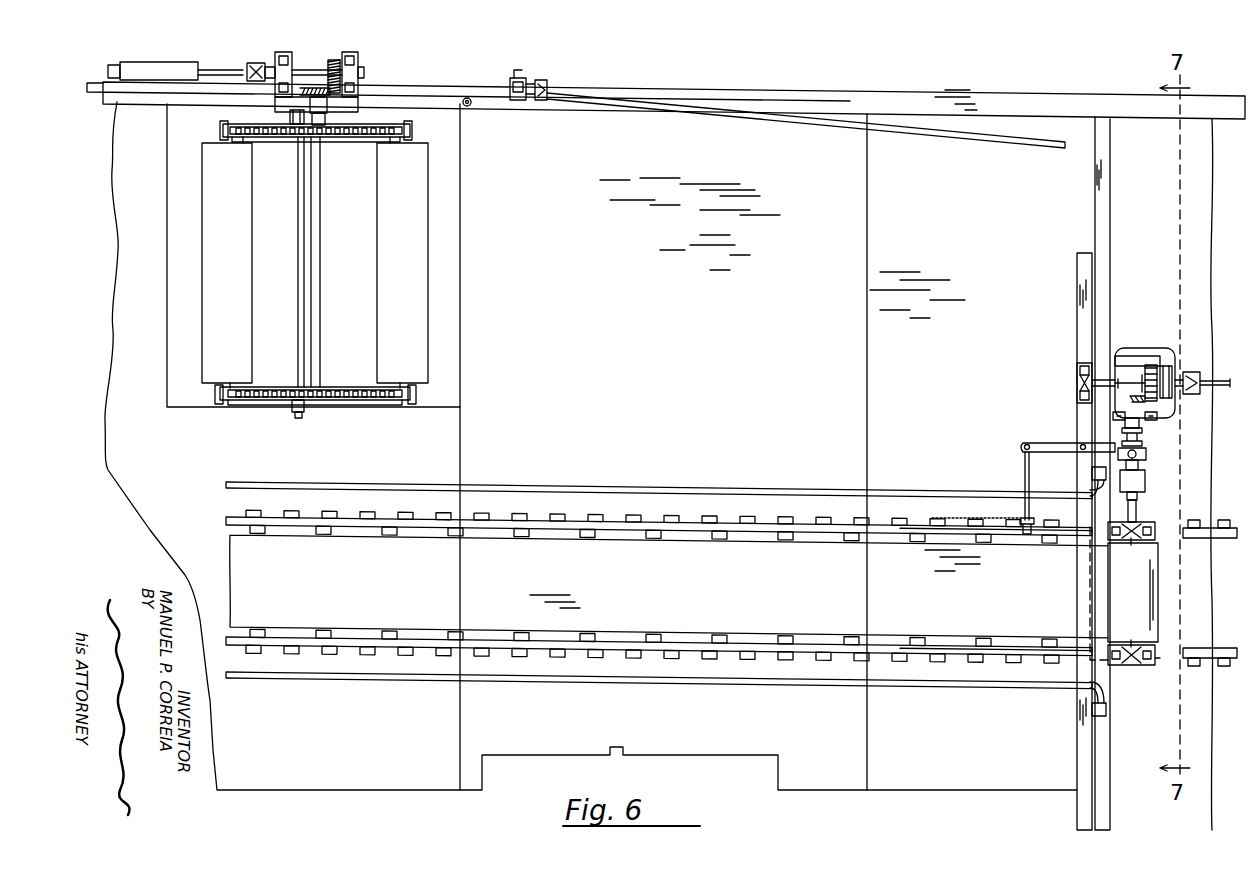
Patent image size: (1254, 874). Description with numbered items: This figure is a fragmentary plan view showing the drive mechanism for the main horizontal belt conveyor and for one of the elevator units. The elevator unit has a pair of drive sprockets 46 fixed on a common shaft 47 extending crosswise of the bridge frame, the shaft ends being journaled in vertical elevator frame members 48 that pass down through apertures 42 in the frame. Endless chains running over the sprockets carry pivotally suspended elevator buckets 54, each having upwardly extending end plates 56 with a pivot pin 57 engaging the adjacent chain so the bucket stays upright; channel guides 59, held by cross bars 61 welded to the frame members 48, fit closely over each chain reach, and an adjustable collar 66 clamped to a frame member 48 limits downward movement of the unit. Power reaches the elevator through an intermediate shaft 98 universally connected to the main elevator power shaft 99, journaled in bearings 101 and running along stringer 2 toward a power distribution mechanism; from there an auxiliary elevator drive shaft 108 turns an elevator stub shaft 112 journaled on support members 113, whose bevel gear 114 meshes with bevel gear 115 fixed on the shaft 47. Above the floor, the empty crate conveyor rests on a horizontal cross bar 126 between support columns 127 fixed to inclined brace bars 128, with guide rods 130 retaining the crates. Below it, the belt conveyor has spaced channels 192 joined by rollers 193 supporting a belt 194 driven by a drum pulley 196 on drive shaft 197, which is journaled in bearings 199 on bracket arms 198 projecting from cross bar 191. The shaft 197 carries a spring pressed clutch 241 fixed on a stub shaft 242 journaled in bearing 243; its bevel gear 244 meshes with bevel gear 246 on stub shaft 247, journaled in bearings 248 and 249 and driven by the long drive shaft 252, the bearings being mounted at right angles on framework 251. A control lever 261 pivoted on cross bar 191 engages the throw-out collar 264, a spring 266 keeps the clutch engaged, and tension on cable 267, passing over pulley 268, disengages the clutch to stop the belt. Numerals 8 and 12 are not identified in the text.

The stringer 2 is at (810, 92).
The table surface 8 is at (622, 378).
The pivot 12 is at (469, 106).
The aperture 42 is at (186, 408).
The drive sprocket 46 is at (362, 138).
The shaft 47 is at (322, 222).
The elevator frame member 48 is at (300, 112).
The elevator bucket 54 is at (232, 342).
The end plate 56 is at (244, 143).
The pivot pin 57 is at (392, 138).
The channel guide 59 is at (218, 128).
The cross bar 61 is at (356, 126).
The adjustable collar 66 is at (290, 114).
The intermediate shaft 98 is at (921, 136).
The main elevator power shaft 99 is at (147, 97).
The bearing 101 is at (518, 102).
The auxiliary elevator drive shaft 108 is at (188, 65).
The elevator stub shaft 112 is at (303, 67).
The support member 113 is at (278, 52).
The bevel gear 114 is at (333, 60).
The bevel gear 115 is at (330, 100).
The horizontal cross bar 126 is at (1090, 585).
The support column 127 is at (1092, 471).
The brace bar 128 is at (1094, 215).
The guide rod 130 is at (250, 482).
The horizontal cross bar 191 is at (1080, 320).
The channel 192 is at (822, 517).
The roller 193 is at (998, 533).
The belt 194 is at (820, 616).
The drum pulley 196 is at (1160, 650).
The drive shaft 197 is at (1137, 512).
The bracket arm 198 is at (1152, 530).
The bearing 199 is at (1133, 592).
The clutch 241 is at (1162, 474).
The stub shaft 242 is at (1150, 440).
The bearing 243 is at (1160, 423).
The bevel gear 244 is at (1138, 384).
The bevel gear 246 is at (1137, 355).
The stub shaft 247 is at (1133, 379).
The bearing 248 is at (1076, 385).
The bearing 249 is at (1180, 374).
The framework 251 is at (1160, 350).
The long drive shaft 252 is at (1204, 396).
The control lever 261 is at (1054, 444).
The throw-out collar 264 is at (1146, 452).
The spring 266 is at (1142, 436).
The cable 267 is at (980, 517).
The pulley 268 is at (1022, 519).